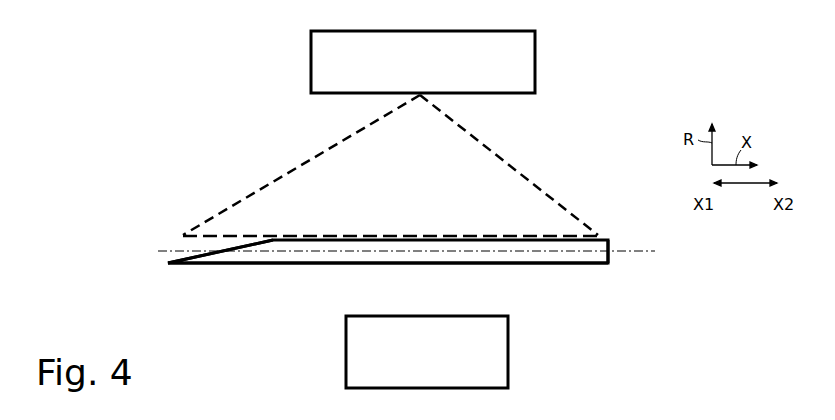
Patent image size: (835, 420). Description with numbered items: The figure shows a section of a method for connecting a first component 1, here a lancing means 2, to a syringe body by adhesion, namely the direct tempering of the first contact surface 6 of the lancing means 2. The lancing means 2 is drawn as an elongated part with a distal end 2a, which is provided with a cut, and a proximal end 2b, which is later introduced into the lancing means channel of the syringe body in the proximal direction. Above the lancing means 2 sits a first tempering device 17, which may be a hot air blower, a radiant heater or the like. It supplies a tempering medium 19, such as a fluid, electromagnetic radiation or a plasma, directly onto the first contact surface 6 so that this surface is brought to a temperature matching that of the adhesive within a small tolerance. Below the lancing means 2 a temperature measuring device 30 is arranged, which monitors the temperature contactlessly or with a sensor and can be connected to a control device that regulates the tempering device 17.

The first tempering device 17 is at (535, 53).
The tempering medium 19 is at (535, 181).
The first component 1 is at (388, 285).
The lancing means 2 is at (258, 264).
The distal end 2a is at (186, 258).
The proximal end 2b is at (609, 258).
The first contact surface 6 is at (571, 264).
The temperature measuring device 30 is at (345, 365).